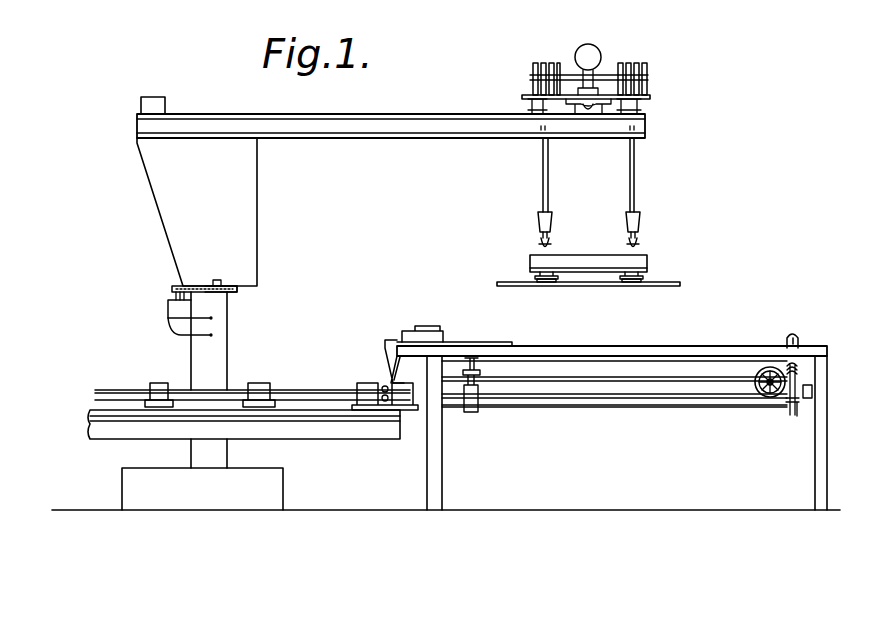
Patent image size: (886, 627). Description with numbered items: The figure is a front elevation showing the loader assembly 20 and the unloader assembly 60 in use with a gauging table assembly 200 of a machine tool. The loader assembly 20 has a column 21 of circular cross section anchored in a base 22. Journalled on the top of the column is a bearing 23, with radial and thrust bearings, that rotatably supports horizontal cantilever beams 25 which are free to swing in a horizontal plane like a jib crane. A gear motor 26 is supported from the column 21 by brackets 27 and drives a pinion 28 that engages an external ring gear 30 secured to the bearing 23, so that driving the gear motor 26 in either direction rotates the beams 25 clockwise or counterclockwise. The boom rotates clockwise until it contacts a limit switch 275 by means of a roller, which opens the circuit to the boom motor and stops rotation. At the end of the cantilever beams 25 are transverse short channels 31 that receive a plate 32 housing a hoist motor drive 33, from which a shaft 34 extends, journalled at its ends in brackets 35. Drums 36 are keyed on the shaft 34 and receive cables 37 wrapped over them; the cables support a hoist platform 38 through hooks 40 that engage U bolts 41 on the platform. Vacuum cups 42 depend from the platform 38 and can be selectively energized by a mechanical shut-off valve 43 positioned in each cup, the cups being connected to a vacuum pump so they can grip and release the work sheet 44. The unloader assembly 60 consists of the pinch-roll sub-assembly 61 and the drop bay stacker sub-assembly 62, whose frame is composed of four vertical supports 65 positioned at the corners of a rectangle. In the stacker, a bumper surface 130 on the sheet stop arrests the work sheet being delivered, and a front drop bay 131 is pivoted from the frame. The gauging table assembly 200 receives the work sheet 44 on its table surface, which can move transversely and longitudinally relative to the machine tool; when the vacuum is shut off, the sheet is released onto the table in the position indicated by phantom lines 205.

The loader assembly 20 is at (132, 112).
The column 21 is at (214, 359).
The base 22 is at (179, 497).
The bearing 23 is at (240, 200).
The cantilever beams 25 is at (290, 133).
The gear motor 26 is at (178, 310).
The brackets 27 is at (181, 332).
The pinion 28 is at (172, 292).
The external ring gear 30 is at (238, 291).
The channels 31 is at (590, 101).
The plate 32 is at (651, 97).
The hoist motor drive 33 is at (591, 55).
The shaft 34 is at (566, 77).
The brackets 35 is at (530, 78).
The drums 36 is at (537, 64).
The cables 37 is at (542, 192).
The hoist platform 38 is at (600, 248).
The hooks 40 is at (538, 231).
The U bolts 41 is at (538, 248).
The vacuum cups 42 is at (545, 283).
The mechanical shut-off valve 43 is at (535, 271).
The work sheet 44 is at (681, 285).
The unloader assembly 60 is at (386, 336).
The pinch-roll sub-assembly 61 is at (412, 372).
The drop bay stacker sub-assembly 62 is at (661, 412).
The vertical supports 65 is at (437, 478).
The bumper surface 130 is at (806, 399).
The front drop bay 131 is at (808, 381).
The gauging table assembly 200 is at (84, 430).
The phantom lines 205 is at (113, 390).
The limit switch 275 is at (243, 252).